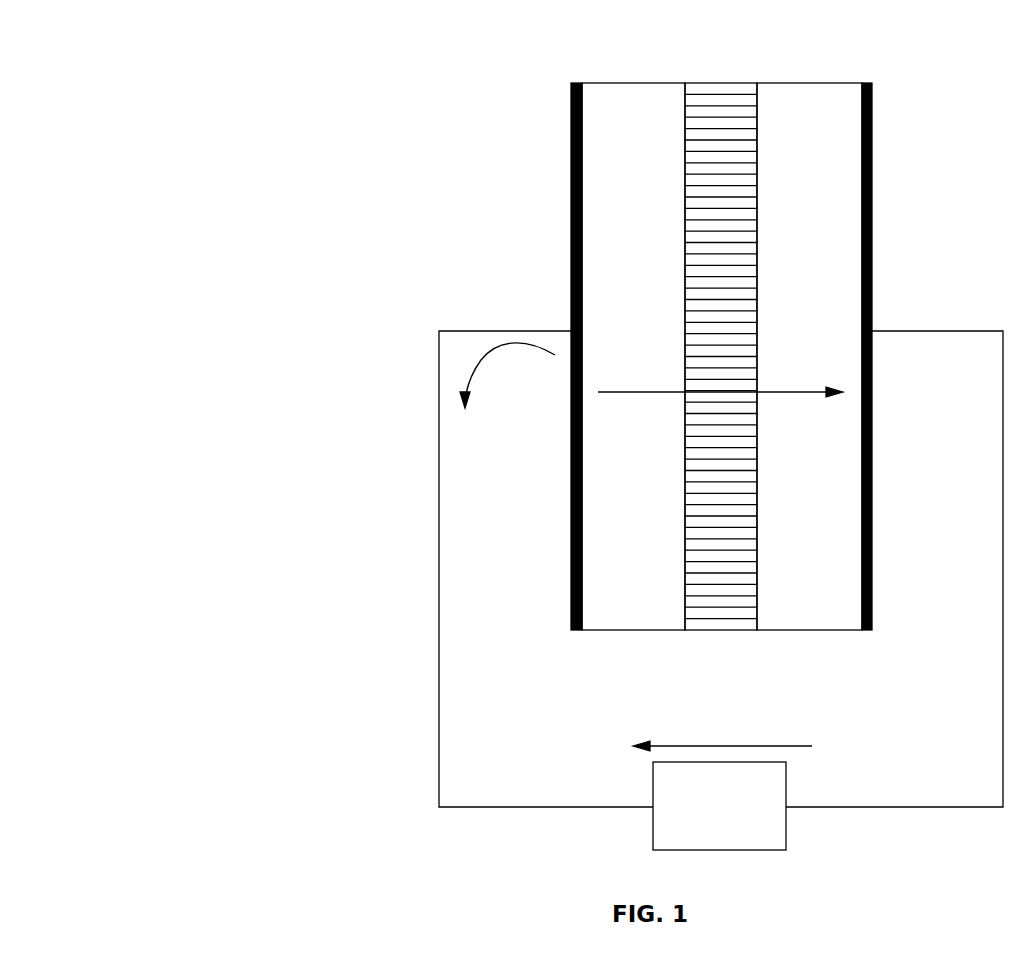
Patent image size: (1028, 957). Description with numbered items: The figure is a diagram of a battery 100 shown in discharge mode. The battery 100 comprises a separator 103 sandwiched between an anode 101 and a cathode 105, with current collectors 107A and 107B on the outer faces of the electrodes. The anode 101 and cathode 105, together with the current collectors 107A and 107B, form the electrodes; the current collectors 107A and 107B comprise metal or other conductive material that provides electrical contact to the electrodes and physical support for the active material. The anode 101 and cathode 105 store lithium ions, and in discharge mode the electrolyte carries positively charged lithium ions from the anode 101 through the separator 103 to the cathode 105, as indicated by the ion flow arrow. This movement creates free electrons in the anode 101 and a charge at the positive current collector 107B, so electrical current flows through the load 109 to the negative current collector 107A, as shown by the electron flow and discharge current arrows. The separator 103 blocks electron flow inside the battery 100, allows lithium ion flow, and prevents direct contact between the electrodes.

The battery 100 is at (260, 175).
The anode 101 is at (652, 293).
The separator 103 is at (722, 83).
The cathode 105 is at (792, 293).
The negative current collector 107A is at (570, 100).
The positive current collector 107B is at (875, 107).
The load 109 is at (700, 830).